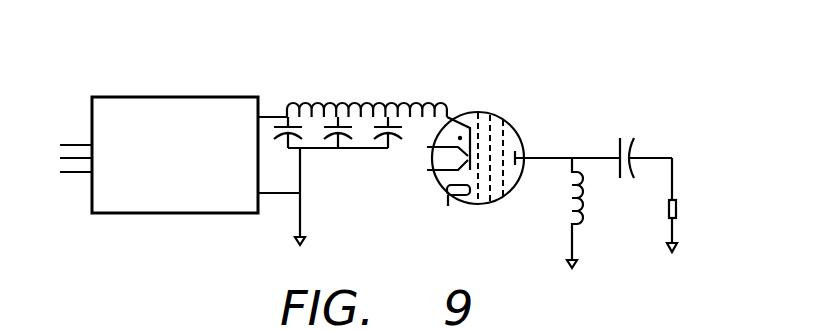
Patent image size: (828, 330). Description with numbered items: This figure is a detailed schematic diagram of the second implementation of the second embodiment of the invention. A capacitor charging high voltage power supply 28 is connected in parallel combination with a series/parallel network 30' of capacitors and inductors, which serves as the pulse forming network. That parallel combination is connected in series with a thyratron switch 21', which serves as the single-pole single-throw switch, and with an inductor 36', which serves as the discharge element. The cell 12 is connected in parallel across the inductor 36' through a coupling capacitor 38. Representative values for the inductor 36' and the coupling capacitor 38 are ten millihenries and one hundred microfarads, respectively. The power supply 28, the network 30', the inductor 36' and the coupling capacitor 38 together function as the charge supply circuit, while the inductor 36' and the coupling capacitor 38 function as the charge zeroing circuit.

The high voltage power supply 28 is at (185, 213).
The series/parallel network of capacitors and inductors 30' is at (345, 75).
The thyratron switch 21' is at (460, 192).
The inductor 36' is at (551, 213).
The coupling capacitor 38 is at (636, 142).
The cell 12 is at (670, 213).